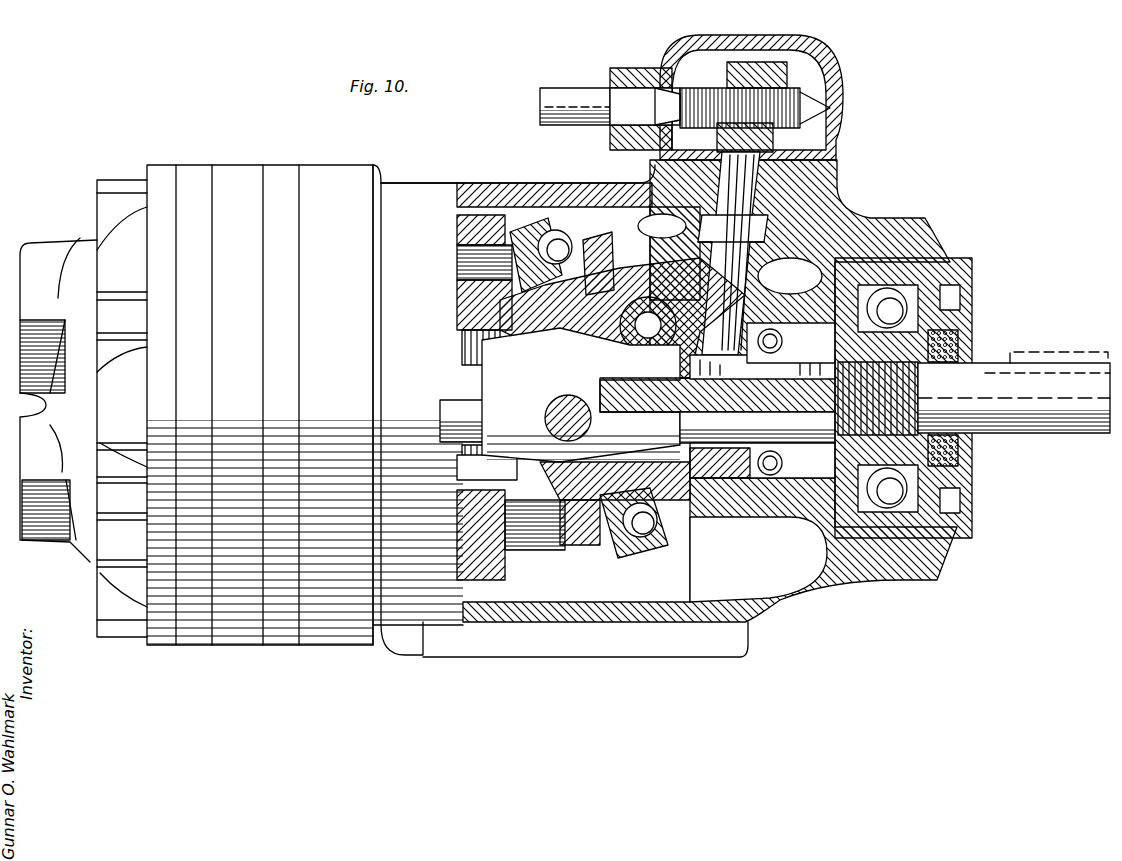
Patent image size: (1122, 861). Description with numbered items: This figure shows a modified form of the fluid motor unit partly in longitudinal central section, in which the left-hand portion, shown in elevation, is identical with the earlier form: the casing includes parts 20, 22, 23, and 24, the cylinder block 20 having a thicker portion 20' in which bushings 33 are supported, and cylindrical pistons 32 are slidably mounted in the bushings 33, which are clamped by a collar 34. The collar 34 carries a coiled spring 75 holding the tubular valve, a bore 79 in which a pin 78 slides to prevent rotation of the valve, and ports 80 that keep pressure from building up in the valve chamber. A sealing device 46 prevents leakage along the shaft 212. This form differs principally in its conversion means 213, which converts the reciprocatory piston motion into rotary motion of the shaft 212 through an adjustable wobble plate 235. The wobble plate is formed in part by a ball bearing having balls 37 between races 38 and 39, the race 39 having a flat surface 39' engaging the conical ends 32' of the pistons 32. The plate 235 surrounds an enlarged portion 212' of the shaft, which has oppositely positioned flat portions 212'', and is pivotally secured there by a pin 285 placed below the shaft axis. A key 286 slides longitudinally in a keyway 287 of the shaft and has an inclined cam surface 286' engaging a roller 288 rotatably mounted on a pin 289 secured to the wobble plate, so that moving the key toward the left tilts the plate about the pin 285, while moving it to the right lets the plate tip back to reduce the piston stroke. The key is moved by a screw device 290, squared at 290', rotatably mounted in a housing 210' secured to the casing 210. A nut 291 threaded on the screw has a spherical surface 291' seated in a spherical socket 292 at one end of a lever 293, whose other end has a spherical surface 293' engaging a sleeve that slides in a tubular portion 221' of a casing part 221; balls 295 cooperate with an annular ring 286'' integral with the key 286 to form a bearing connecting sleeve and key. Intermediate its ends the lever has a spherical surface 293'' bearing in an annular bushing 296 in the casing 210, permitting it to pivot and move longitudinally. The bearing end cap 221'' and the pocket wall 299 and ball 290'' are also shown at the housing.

The casing section 20 is at (305, 426).
The port plate 22 is at (243, 617).
The casing section 23 is at (197, 628).
The casing section 24 is at (165, 628).
The thicker portion 20' is at (507, 585).
The cylindrical pistons 32 is at (490, 398).
The piston ends 32' is at (585, 543).
The bushings 33 is at (508, 230).
The collar 34 is at (530, 507).
The balls 37 is at (566, 245).
The race 38 is at (650, 285).
The race 39 is at (563, 212).
The flat surface 39' is at (638, 540).
The sealing device 46 is at (958, 348).
The coiled spring 75 is at (470, 355).
The pin 78 is at (462, 336).
The bore 79 is at (470, 378).
The ports 80 is at (487, 464).
The casing 210 is at (669, 382).
The housing 210' is at (847, 58).
The shaft 212 is at (1014, 381).
The enlarged portion 212' is at (454, 410).
The flat portions 212'' is at (581, 395).
The conversion means 213 is at (620, 262).
The casing part 221 is at (560, 427).
The tubular portion 221' is at (758, 549).
The bearing end cap 221'' is at (915, 380).
The adjustable wobble plate 235 is at (660, 262).
The pin 285 is at (590, 420).
The key 286 is at (762, 368).
The cam surface 286' is at (560, 353).
The annular ring 286'' is at (819, 348).
The keyway 287 is at (568, 404).
The roller 288 is at (651, 316).
The pin 289 is at (668, 275).
The screw device 290 is at (769, 97).
The squared portion 290' is at (658, 173).
The adjusting ball 290'' is at (793, 342).
The nut 291 is at (755, 82).
The spherical surface 291' is at (706, 75).
The spherical socket 292 is at (838, 150).
The lever 293 is at (792, 253).
The spherical surface 293' is at (790, 273).
The spherical surface 293'' is at (701, 168).
The balls 295 is at (785, 463).
The annular bushing 296 is at (820, 205).
The lever pocket wall 299 is at (800, 278).